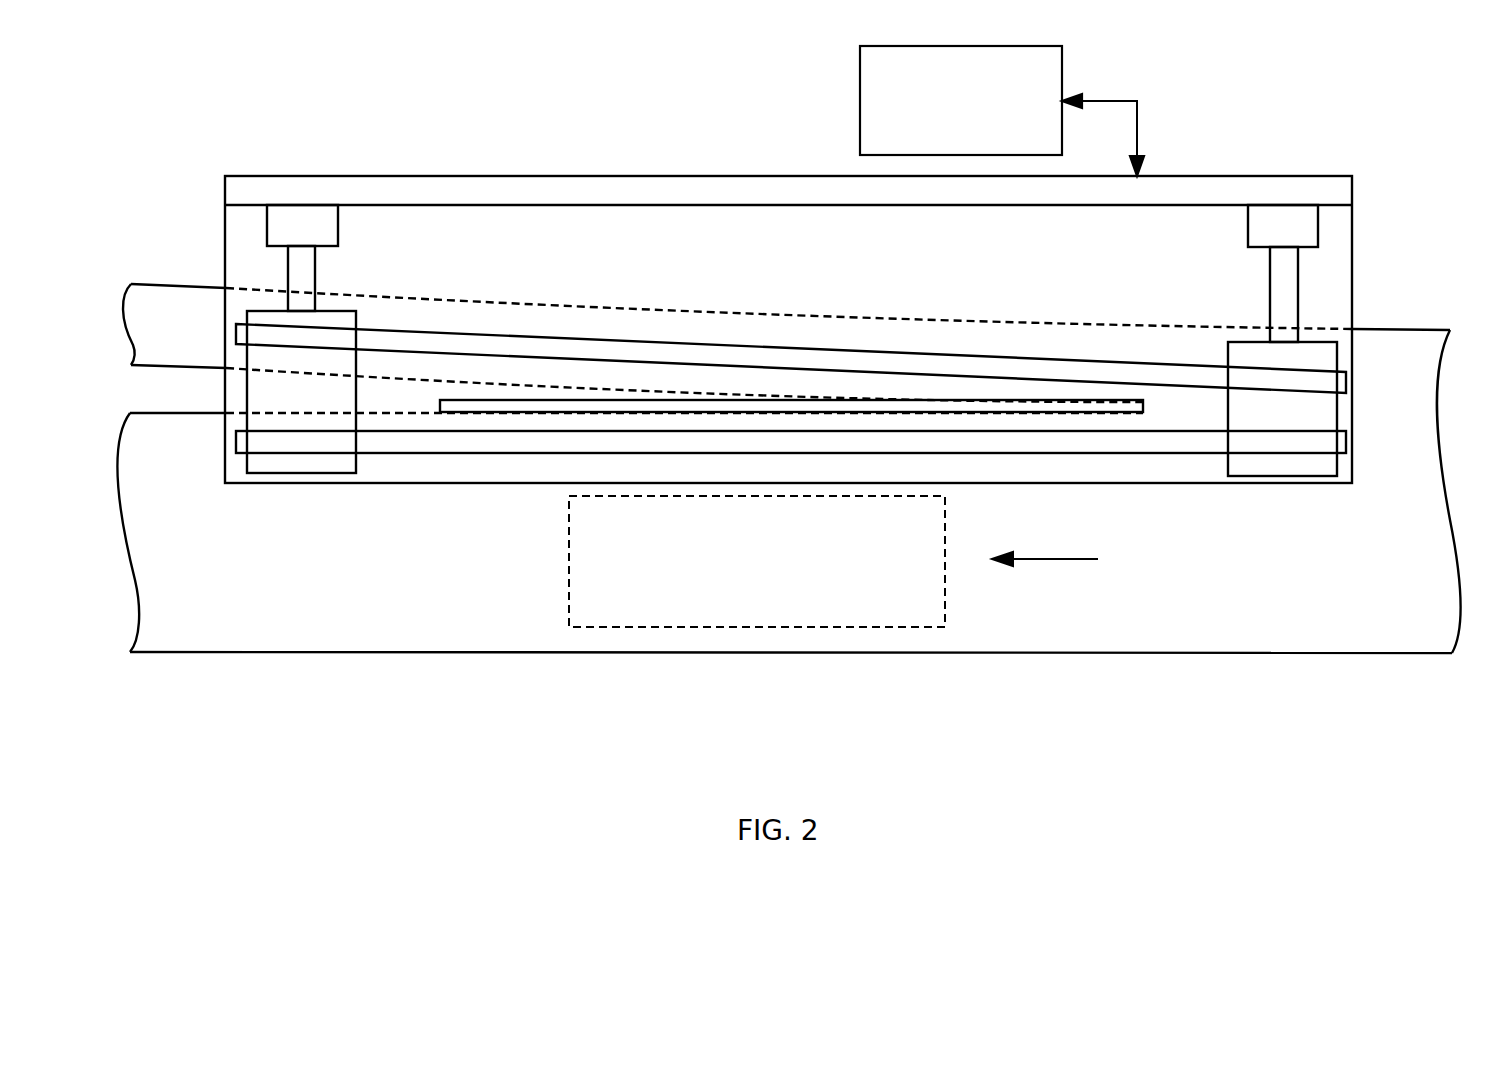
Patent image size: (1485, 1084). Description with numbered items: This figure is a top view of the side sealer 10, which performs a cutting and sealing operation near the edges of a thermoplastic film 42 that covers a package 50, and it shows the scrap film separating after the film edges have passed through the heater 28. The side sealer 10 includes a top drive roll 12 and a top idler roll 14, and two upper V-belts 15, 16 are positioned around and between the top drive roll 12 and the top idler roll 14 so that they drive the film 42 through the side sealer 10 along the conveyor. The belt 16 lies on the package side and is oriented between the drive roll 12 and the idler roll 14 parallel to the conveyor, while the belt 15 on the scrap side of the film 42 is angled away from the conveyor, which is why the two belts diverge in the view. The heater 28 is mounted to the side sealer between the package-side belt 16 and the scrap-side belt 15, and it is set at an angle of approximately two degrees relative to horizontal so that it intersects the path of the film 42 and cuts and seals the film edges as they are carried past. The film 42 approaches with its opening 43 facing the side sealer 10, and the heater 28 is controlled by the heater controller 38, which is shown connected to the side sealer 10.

The side sealer 10 is at (790, 176).
The top drive roll 12 is at (312, 473).
The top idler roll 14 is at (1308, 478).
The upper V-belt 15 is at (1346, 383).
The upper V-belt 16 is at (1347, 441).
The heater 28 is at (470, 400).
The heater controller 38 is at (945, 145).
The thermoplastic film 42 is at (1160, 653).
The opening 43 is at (195, 286).
The package 50 is at (947, 558).